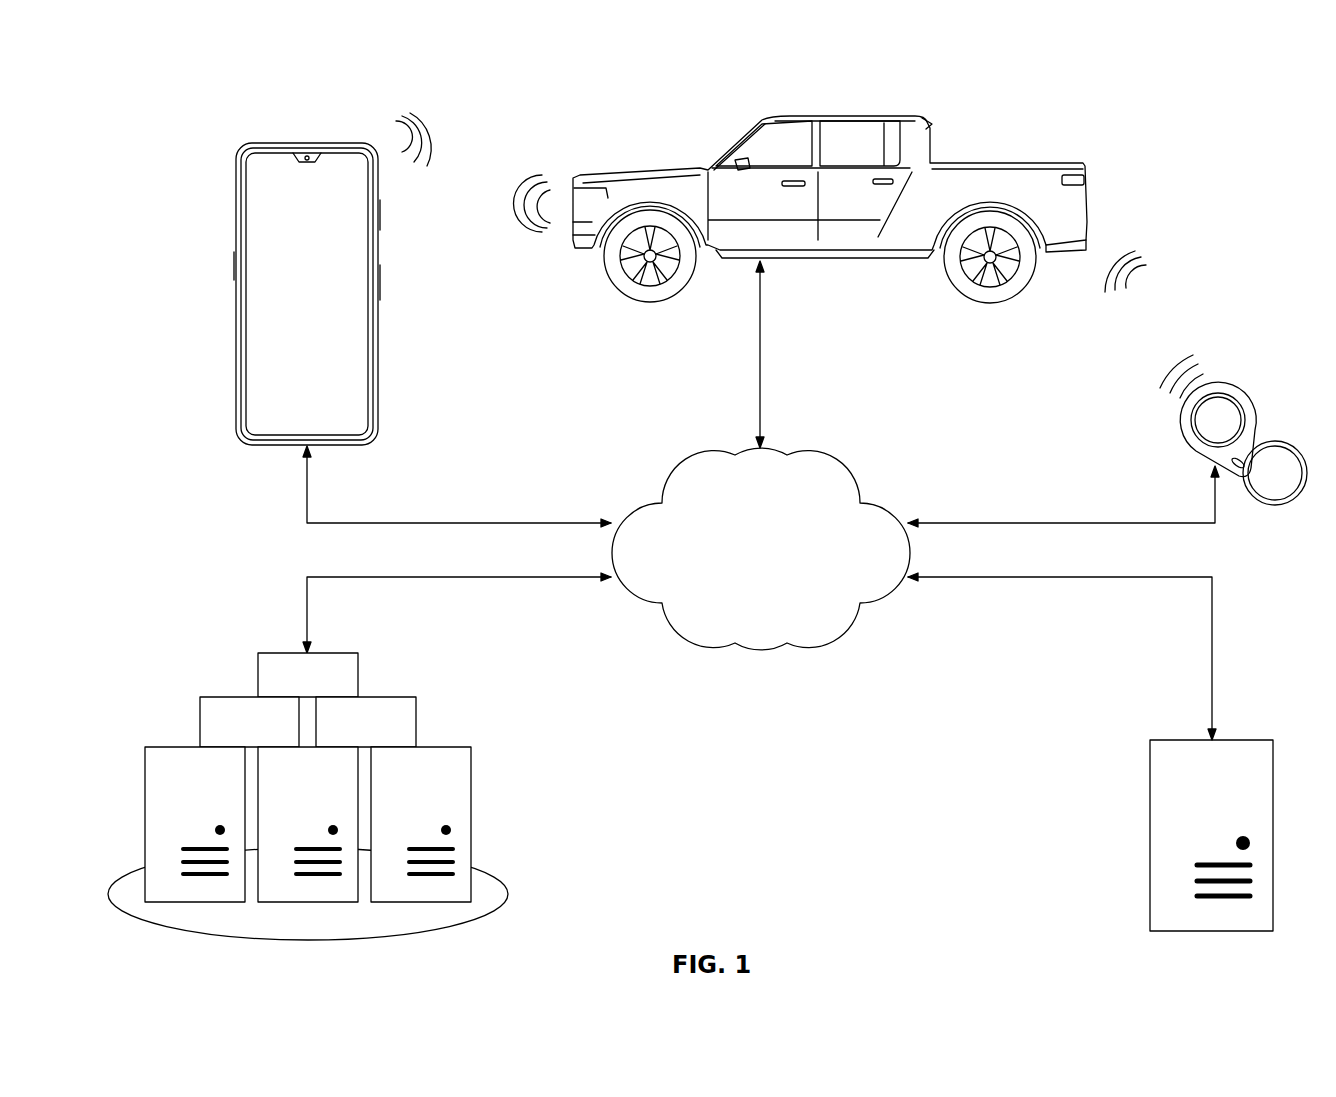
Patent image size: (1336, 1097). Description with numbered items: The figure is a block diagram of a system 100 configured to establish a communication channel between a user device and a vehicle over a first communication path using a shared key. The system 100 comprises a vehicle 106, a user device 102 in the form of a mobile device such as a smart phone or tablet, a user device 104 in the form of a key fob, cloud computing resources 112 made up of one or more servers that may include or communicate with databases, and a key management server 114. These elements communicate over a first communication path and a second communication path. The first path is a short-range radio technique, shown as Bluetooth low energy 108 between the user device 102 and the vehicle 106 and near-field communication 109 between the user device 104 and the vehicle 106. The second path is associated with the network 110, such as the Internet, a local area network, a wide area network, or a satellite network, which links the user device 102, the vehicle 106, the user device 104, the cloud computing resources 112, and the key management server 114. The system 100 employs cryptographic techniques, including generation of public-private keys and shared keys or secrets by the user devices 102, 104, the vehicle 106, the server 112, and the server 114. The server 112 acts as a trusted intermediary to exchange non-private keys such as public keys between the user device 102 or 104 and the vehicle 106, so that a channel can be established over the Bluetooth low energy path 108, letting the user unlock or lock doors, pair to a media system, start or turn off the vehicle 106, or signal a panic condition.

The system 100 is at (158, 86).
The user device 102 is at (275, 143).
The user device 104 is at (1247, 433).
The vehicle 106 is at (858, 117).
The Bluetooth low energy 108 is at (428, 135).
The near-field communication 109 is at (1180, 358).
The network 110 is at (692, 453).
The cloud computing resources 112 is at (285, 652).
The key management server 114 is at (1188, 740).